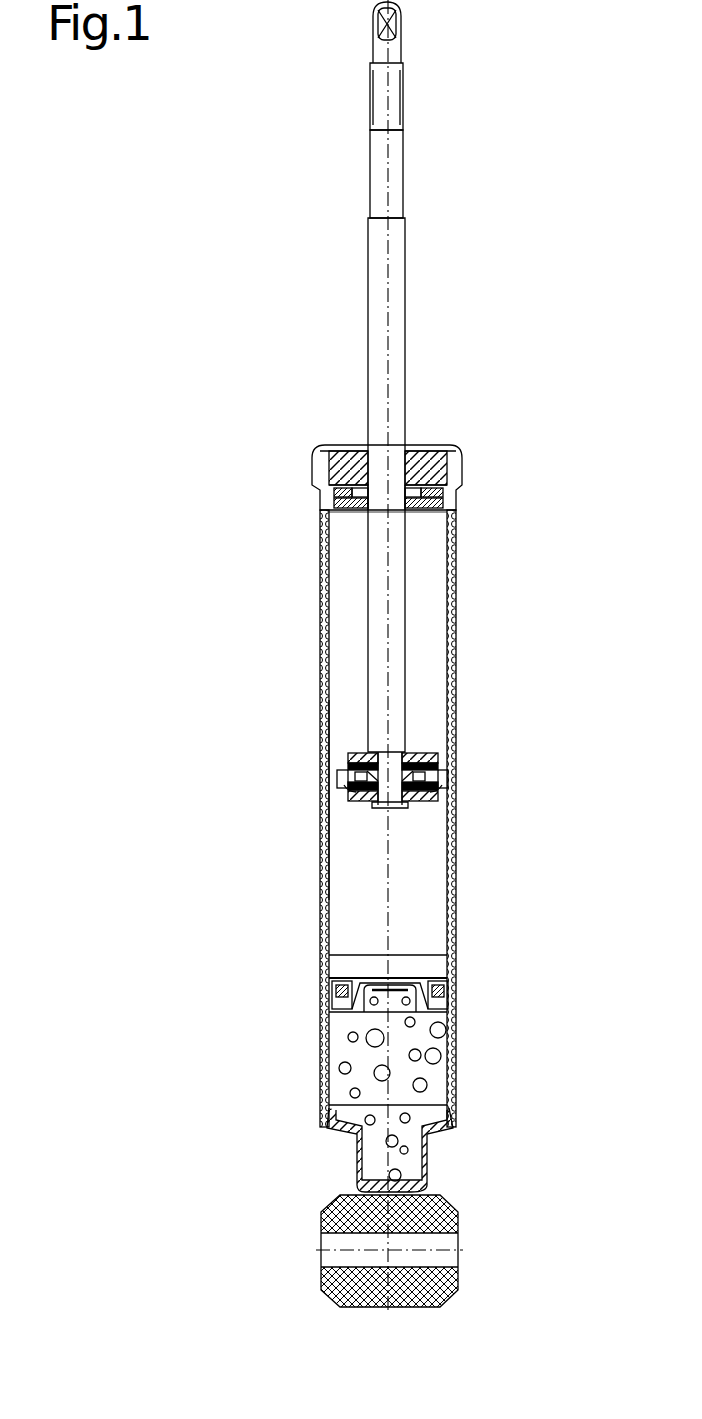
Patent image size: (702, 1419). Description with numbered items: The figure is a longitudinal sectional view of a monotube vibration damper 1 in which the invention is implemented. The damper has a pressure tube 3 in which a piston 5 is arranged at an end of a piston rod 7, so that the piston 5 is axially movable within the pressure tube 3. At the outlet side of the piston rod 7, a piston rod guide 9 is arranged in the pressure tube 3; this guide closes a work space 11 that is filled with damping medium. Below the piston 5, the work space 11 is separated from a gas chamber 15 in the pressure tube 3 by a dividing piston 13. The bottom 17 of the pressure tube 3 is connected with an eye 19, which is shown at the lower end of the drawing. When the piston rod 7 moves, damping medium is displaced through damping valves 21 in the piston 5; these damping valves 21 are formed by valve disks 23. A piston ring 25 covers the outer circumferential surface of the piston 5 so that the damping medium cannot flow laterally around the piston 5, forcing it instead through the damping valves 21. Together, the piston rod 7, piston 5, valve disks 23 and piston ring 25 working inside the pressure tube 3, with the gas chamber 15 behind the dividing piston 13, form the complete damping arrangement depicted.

The monotube vibration damper 1 is at (160, 838).
The pressure tube 3 is at (457, 636).
The piston 5 is at (335, 826).
The piston rod 7 is at (378, 284).
The piston rod guide 9 is at (456, 477).
The work space 11 is at (345, 645).
The dividing piston 13 is at (420, 978).
The gas chamber 15 is at (418, 1070).
The bottom 17 is at (450, 1133).
The eye 19 is at (455, 1218).
The damping valves 21 is at (440, 790).
The valve disks 23 is at (345, 760).
The piston ring 25 is at (455, 738).